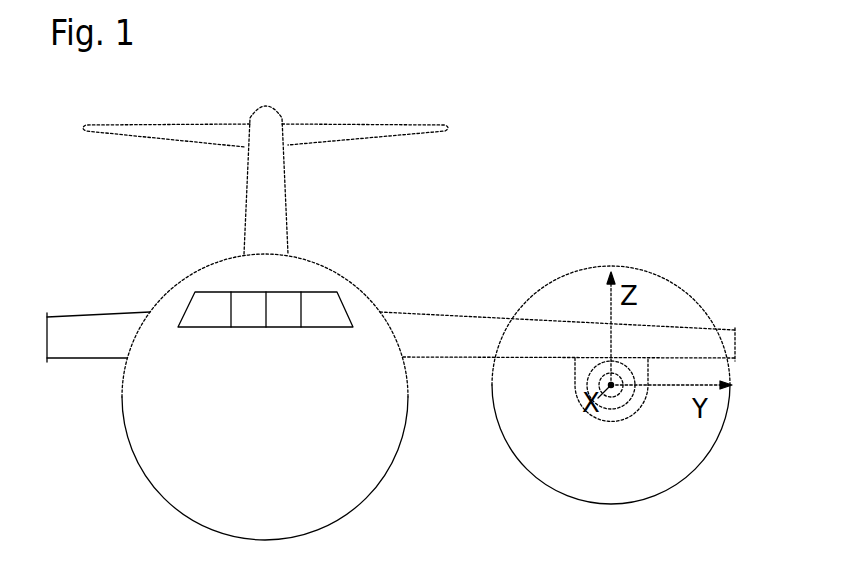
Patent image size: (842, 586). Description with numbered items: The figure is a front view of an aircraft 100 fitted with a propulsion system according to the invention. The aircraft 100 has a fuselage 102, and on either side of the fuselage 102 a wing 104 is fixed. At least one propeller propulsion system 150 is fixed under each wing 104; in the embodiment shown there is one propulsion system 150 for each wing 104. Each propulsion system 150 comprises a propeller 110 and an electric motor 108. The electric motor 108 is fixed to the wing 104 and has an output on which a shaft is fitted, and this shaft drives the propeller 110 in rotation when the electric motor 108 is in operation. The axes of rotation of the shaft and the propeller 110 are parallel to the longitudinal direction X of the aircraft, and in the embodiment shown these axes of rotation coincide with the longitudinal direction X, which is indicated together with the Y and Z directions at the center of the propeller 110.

The aircraft 100 is at (483, 212).
The fuselage 102 is at (168, 293).
The wing 104 is at (75, 327).
The electric motor 108 is at (626, 414).
The propeller 110 is at (683, 291).
The propeller propulsion system 150 is at (503, 475).